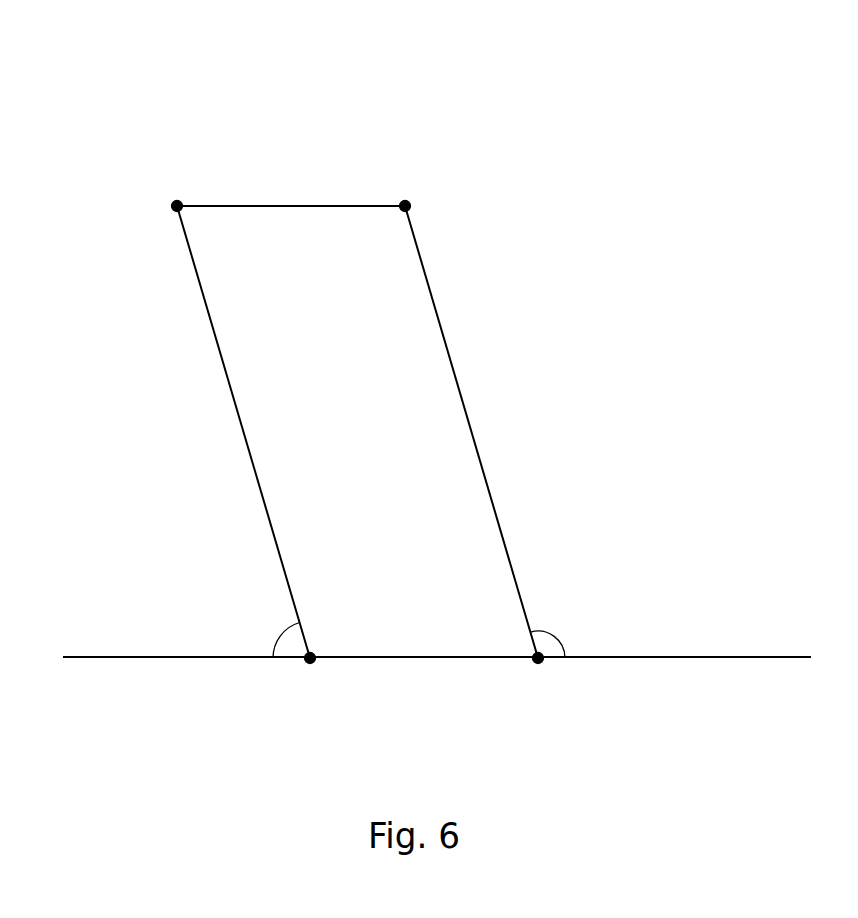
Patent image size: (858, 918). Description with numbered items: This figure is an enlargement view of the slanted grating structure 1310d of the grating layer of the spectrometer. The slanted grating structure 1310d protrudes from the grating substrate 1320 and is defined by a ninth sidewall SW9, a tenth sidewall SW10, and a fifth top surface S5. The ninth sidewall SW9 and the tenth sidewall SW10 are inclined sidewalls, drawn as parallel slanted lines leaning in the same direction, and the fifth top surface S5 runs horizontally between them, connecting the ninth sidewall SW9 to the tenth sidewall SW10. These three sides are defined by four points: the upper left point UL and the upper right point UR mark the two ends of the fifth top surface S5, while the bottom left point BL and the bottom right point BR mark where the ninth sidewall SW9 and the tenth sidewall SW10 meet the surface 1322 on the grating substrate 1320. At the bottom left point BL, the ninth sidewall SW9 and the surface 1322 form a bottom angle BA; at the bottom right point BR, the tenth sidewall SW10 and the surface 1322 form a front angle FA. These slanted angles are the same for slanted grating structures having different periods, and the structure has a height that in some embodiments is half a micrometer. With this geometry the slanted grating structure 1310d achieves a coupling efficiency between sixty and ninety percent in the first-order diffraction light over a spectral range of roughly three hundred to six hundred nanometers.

The slanted grating structure 1310d is at (88, 110).
The fifth top surface S5 is at (321, 205).
The ninth sidewall SW9 is at (232, 400).
The tenth sidewall SW10 is at (469, 423).
The upper left point UL is at (198, 219).
The upper right point UR is at (428, 219).
The bottom left point BL is at (332, 644).
The bottom right point BR is at (516, 644).
The bottom angle BA is at (266, 634).
The front angle FA is at (565, 635).
The grating substrate 1320 is at (806, 707).
The surface 1322 is at (128, 656).